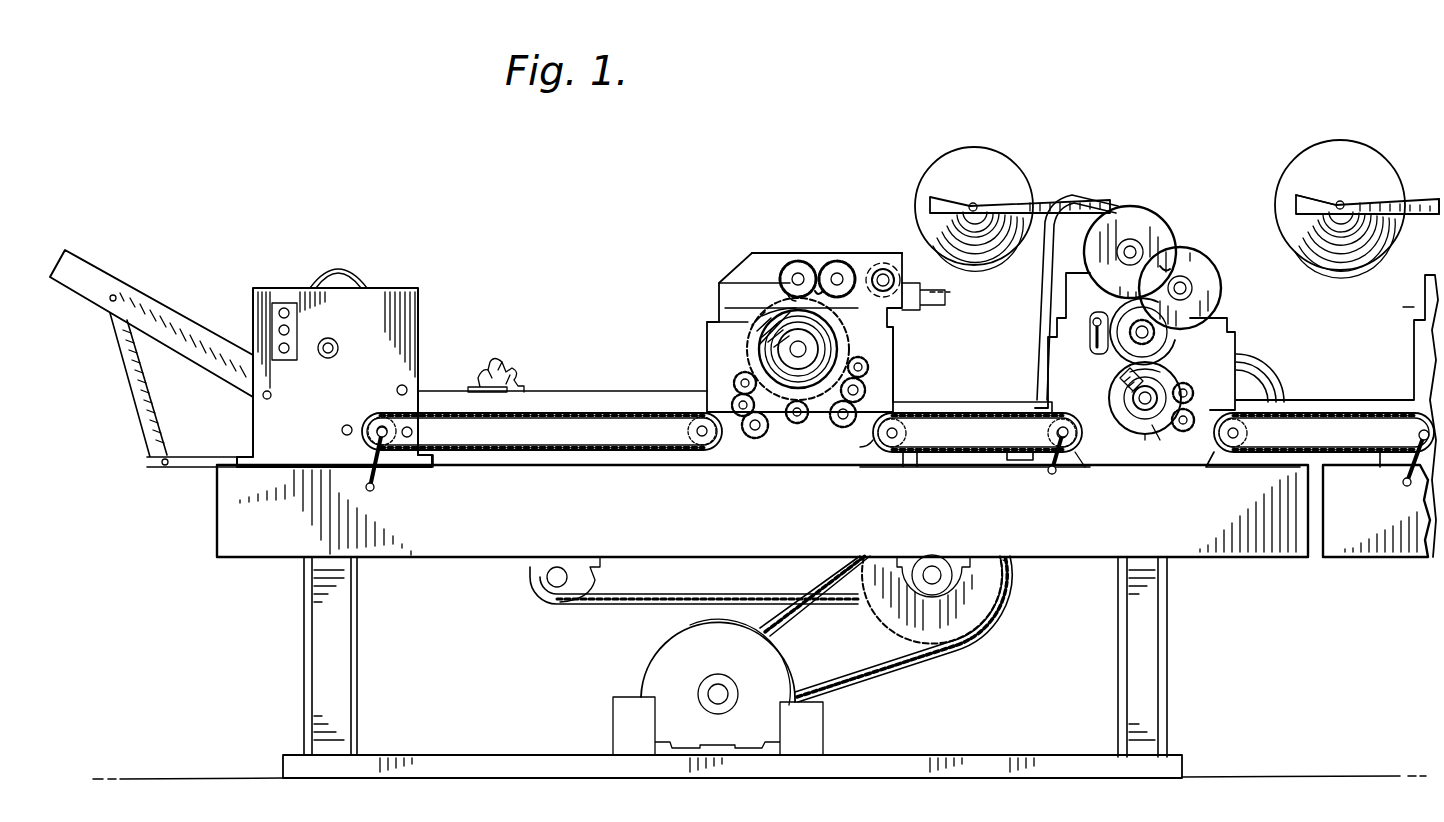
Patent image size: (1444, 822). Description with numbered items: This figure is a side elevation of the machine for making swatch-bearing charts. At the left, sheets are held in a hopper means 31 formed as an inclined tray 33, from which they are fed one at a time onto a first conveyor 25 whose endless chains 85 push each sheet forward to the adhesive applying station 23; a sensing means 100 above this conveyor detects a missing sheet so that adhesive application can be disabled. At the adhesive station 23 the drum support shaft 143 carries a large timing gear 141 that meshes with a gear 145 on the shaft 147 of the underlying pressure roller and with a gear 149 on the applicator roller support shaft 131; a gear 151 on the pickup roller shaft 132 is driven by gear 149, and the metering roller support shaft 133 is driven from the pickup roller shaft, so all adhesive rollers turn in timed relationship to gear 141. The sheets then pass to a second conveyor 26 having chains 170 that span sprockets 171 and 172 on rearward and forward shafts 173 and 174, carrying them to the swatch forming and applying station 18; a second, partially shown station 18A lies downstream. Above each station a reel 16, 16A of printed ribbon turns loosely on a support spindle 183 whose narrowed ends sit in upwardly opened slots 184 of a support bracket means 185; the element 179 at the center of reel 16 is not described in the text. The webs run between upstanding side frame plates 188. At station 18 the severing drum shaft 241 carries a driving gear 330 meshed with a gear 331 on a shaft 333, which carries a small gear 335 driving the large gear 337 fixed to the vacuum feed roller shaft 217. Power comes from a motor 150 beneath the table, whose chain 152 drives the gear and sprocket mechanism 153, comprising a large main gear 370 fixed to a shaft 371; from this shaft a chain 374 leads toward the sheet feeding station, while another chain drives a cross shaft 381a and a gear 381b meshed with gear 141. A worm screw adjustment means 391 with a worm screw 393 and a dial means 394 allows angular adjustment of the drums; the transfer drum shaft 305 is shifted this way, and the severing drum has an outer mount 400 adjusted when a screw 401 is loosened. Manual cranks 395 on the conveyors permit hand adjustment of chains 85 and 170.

The reel 16 is at (980, 160).
The reel 16A is at (1355, 148).
The swatch forming and applying station 18 is at (1094, 170).
The second swatch forming and applying station 18A is at (1422, 289).
The adhesive applying station 23 is at (778, 238).
The first conveyor means 25 is at (542, 395).
The second conveyor 26 is at (961, 432).
The hopper means 31 is at (183, 300).
The inclined tray 33 is at (188, 358).
The chains 85 is at (543, 413).
The detecting or sensing means 100 is at (516, 378).
The adhesive applicator roller support shaft 131 is at (800, 270).
The pickup roller shaft 132 is at (846, 262).
The metering roller support shaft 133 is at (884, 268).
The timing gear 141 is at (764, 340).
The drum support shaft 143 is at (806, 349).
The gear 145 is at (762, 438).
The shaft 147 is at (797, 424).
The gear 149 is at (790, 266).
The motor 150 is at (652, 650).
The gear 151 is at (824, 282).
The drive chain 152 is at (907, 686).
The main gear and sprocket mechanism 153 is at (1012, 597).
The chains 170 is at (893, 412).
The sprocket 171 is at (876, 452).
The sprocket 172 is at (1072, 468).
The rearward shaft 173 is at (893, 452).
The forward shaft 174 is at (1062, 428).
The roll spindle 179 is at (978, 204).
The support spindle 183 is at (1342, 203).
The slots 184 is at (948, 196).
The support bracket means 185 is at (1418, 195).
The side frame plates 188 is at (1145, 440).
The vacuum feed roller shaft 217 is at (1134, 240).
The drum shaft 241 is at (1224, 334).
The transfer drum shaft 305 is at (1153, 428).
The driving gear 330 is at (1150, 338).
The gear 331 is at (1222, 280).
The shaft 333 is at (1186, 284).
The small gear 335 is at (1172, 268).
The large gear 337 is at (1150, 218).
The main gear 370 is at (955, 636).
The shaft 371 is at (935, 565).
The chain 374 is at (658, 604).
The cross shaft 381a is at (731, 384).
The gear 381b is at (736, 376).
The worm screw adjustment means 391 is at (752, 320).
The worm screw 393 is at (762, 320).
The dial means 394 is at (843, 428).
The manual cranks 395 is at (378, 488).
The outer mount 400 is at (1092, 342).
The screw 401 is at (1094, 325).